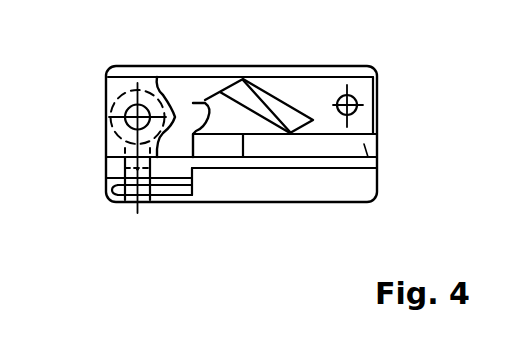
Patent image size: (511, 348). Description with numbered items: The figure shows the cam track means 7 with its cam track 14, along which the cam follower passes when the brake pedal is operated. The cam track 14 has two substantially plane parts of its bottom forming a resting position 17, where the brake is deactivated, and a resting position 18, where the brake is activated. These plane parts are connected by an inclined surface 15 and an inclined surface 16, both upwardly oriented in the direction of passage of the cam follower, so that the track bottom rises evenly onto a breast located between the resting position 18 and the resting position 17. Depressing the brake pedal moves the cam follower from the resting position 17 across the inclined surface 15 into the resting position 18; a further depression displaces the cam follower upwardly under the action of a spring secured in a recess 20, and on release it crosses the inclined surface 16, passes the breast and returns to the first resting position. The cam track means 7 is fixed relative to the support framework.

The cam track means 7 is at (245, 203).
The cam track 14 is at (378, 143).
The inclined surface 15 is at (232, 149).
The inclined surface 16 is at (267, 104).
The resting position 17 is at (377, 175).
The resting position 18 is at (193, 113).
The recess 20 is at (104, 196).